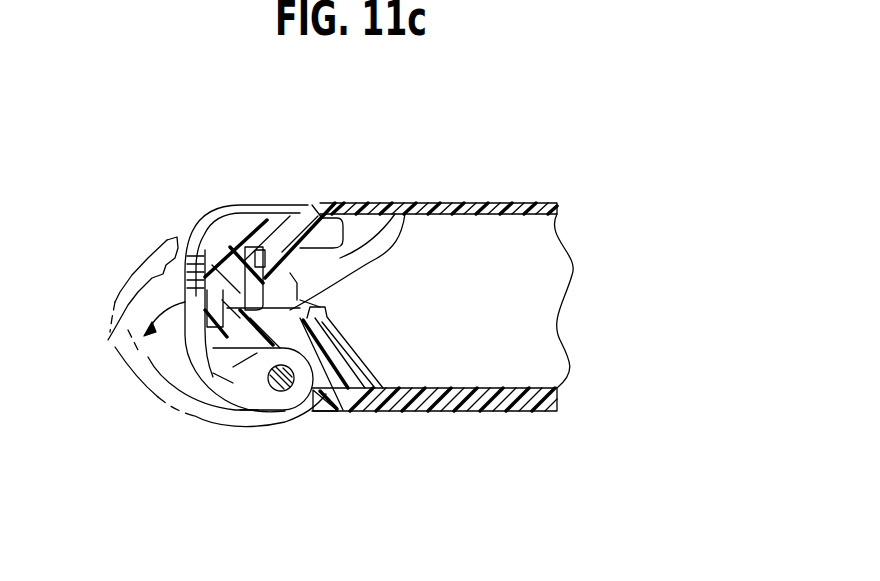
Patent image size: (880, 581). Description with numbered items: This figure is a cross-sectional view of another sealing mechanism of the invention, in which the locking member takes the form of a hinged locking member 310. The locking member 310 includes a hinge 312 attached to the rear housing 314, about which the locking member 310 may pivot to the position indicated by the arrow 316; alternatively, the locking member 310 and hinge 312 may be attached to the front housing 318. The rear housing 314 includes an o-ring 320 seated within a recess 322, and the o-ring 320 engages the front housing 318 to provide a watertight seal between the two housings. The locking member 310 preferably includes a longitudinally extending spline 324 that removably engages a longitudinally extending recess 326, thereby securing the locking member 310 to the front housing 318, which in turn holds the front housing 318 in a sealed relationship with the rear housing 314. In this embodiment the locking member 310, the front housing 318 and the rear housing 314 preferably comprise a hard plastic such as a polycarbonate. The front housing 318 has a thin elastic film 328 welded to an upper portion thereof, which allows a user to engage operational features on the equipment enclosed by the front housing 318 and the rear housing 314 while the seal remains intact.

The hinged locking member 310 is at (230, 204).
The hinge 312 is at (338, 411).
The rear housing 314 is at (412, 409).
The arrow 316 is at (110, 340).
The front housing 318 is at (247, 207).
The o-ring 320 is at (172, 234).
The recess 322 is at (410, 203).
The longitudinally extending spline 324 is at (270, 212).
The longitudinally extending recess 326 is at (337, 208).
The thin elastic film 328 is at (383, 210).